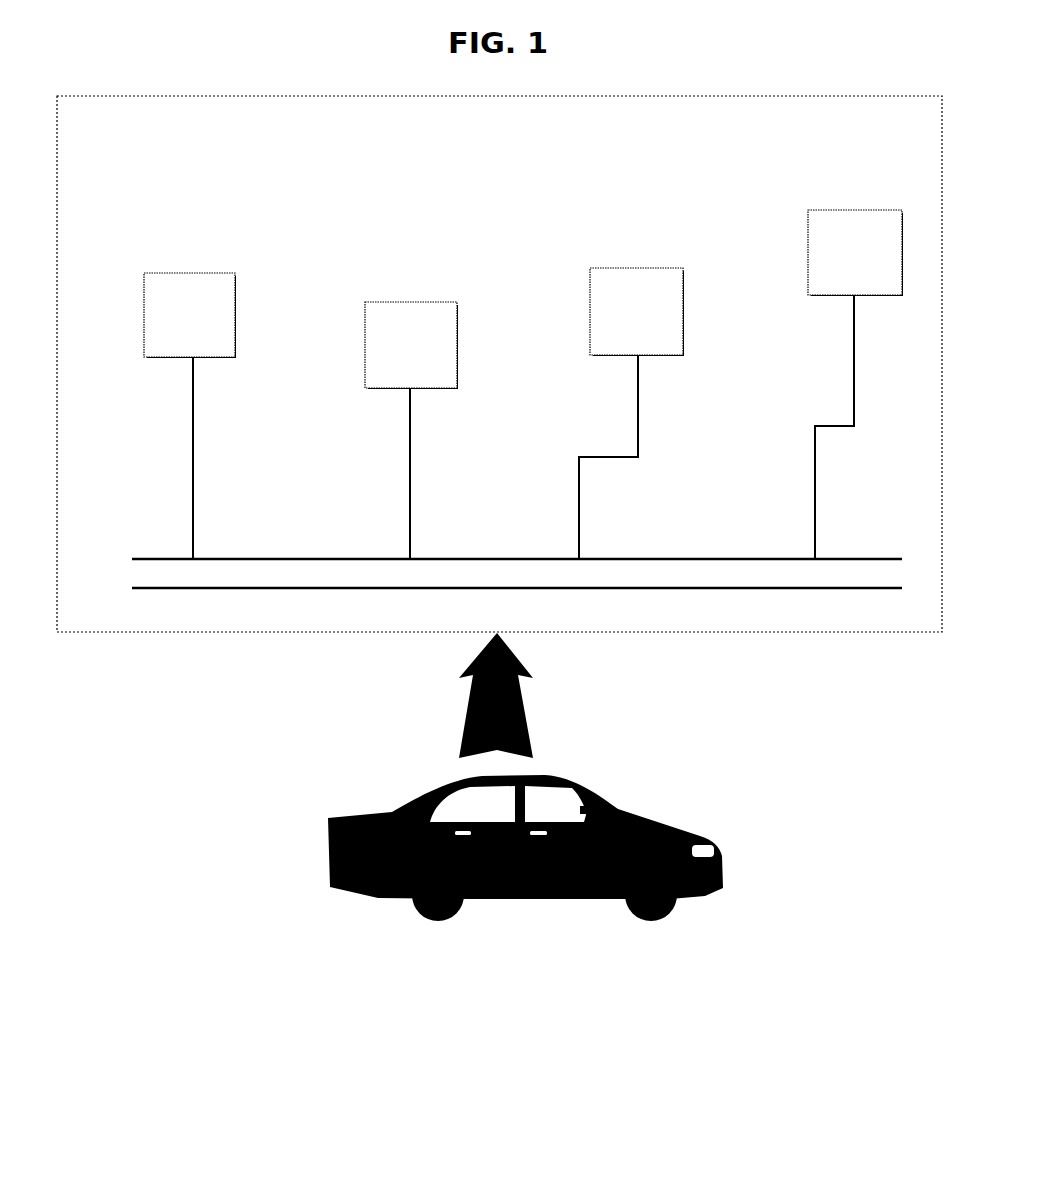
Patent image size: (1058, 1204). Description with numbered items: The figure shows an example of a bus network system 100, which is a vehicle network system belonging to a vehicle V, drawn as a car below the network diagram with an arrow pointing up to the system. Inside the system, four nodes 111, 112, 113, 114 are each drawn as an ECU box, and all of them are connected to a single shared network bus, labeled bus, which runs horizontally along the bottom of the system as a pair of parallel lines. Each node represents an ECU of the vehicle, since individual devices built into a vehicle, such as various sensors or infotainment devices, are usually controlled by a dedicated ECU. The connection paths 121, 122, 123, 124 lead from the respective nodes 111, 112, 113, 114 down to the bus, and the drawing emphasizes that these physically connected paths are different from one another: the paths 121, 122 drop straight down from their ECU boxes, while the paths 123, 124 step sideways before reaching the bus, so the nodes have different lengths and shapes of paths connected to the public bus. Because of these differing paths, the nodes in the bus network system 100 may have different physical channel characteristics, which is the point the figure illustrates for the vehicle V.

The bus network system 100 is at (128, 145).
The node 111 is at (187, 273).
The node 112 is at (410, 302).
The node 113 is at (636, 268).
The node 114 is at (854, 210).
The first connection line 121 is at (193, 467).
The second connection line 122 is at (410, 467).
The third connection line 123 is at (579, 520).
The fourth connection line 124 is at (815, 510).
The shared network bus is at (225, 583).
The vehicle V is at (525, 923).